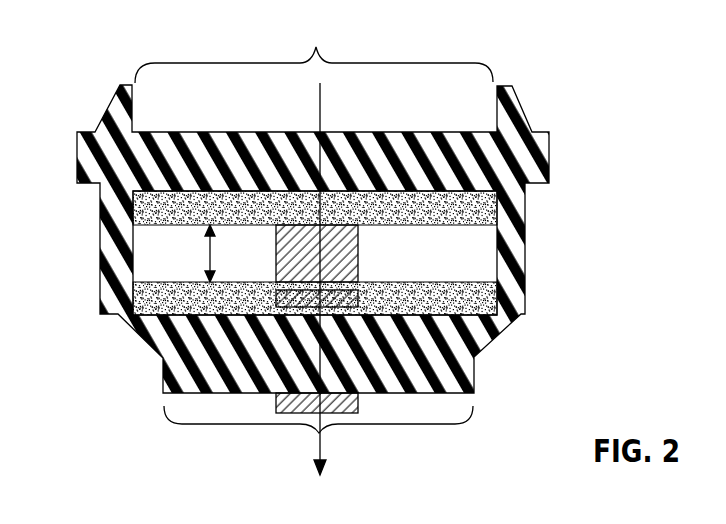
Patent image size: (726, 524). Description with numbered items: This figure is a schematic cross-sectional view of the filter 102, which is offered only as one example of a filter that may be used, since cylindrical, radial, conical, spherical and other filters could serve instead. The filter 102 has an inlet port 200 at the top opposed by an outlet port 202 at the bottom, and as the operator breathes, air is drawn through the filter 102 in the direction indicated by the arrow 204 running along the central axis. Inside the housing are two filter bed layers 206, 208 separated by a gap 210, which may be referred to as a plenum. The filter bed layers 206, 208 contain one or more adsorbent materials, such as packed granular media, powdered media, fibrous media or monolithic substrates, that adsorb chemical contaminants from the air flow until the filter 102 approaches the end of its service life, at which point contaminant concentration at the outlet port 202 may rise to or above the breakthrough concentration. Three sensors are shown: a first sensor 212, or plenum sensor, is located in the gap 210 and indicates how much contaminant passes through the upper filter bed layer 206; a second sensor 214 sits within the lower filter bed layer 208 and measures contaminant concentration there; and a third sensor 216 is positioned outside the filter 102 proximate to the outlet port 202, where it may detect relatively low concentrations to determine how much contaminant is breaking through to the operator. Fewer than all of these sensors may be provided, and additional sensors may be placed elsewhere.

The filter 102 is at (549, 143).
The inlet port 200 is at (314, 48).
The outlet port 202 is at (319, 434).
The arrow 204 is at (322, 112).
The upper filter bed layer 206 is at (468, 212).
The lower filter bed layer 208 is at (468, 298).
The gap 210 is at (208, 248).
The first sensor 212 is at (337, 250).
The second sensor 214 is at (333, 293).
The third sensor 216 is at (358, 406).